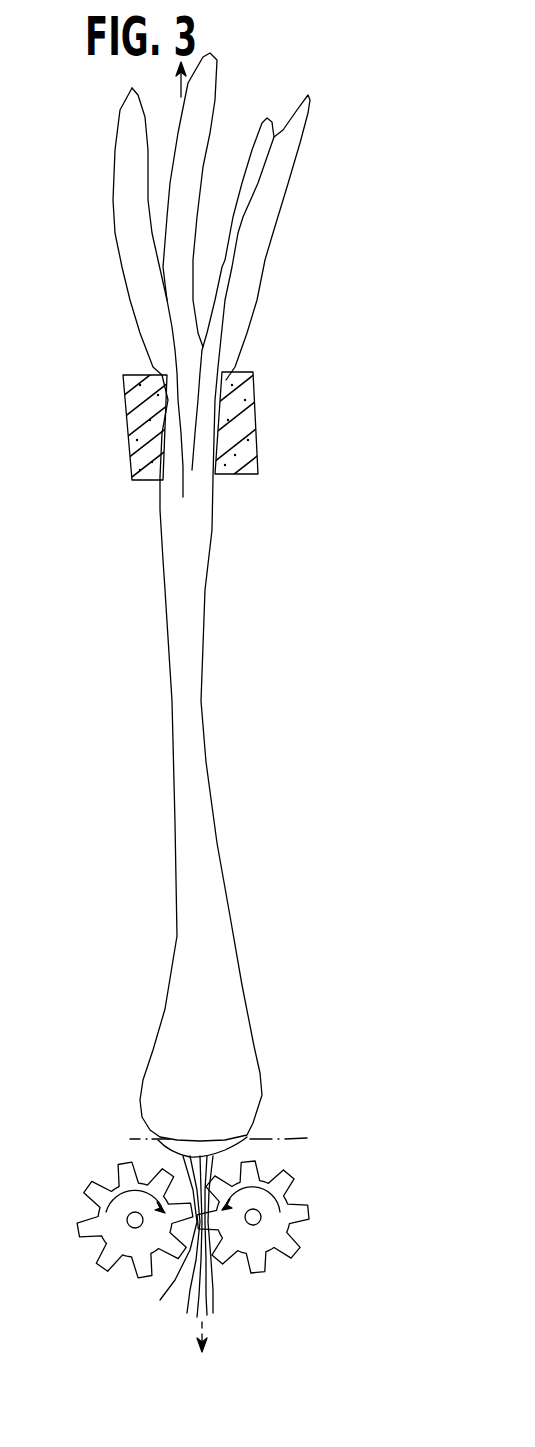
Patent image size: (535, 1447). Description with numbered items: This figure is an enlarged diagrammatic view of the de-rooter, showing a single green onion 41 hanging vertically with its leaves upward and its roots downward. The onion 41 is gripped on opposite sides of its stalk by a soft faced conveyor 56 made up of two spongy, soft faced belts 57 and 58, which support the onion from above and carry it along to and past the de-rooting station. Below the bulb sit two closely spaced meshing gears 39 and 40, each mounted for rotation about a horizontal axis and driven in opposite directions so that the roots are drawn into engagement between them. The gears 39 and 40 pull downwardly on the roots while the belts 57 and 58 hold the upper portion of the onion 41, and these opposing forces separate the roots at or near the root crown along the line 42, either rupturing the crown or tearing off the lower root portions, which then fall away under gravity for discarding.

The gear 39 is at (278, 1213).
The gear 40 is at (132, 1205).
The onion 41 is at (213, 562).
The line 42 is at (287, 1133).
The soft faced conveyor 56 is at (118, 482).
The soft faced belt 57 is at (253, 390).
The soft faced belt 58 is at (135, 425).